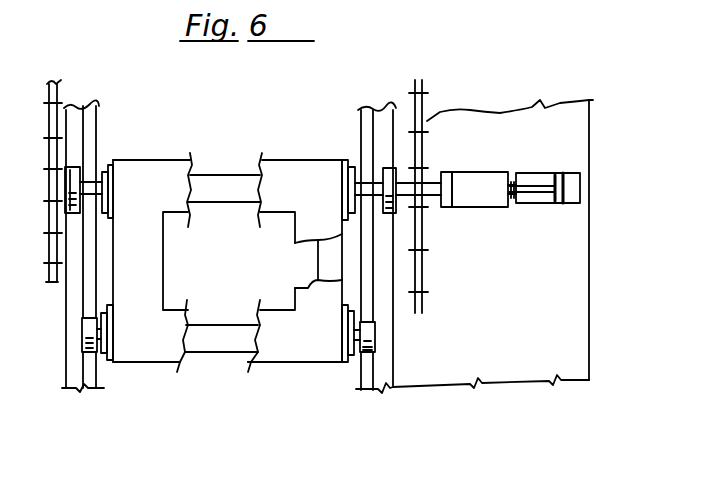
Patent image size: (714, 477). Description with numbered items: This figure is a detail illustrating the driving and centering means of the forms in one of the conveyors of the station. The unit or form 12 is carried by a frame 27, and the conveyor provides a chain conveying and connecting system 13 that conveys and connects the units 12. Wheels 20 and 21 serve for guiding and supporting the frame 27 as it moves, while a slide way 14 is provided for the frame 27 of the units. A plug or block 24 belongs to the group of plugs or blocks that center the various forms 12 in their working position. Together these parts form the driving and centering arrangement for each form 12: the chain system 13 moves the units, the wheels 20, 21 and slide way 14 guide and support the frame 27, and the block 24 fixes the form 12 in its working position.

The unit 12 is at (136, 158).
The chain conveying and connecting system 13 is at (427, 122).
The slide way 14 is at (375, 316).
The wheel 20 is at (390, 182).
The wheel 21 is at (375, 343).
The plug or block 24 is at (512, 212).
The frame 27 is at (283, 363).